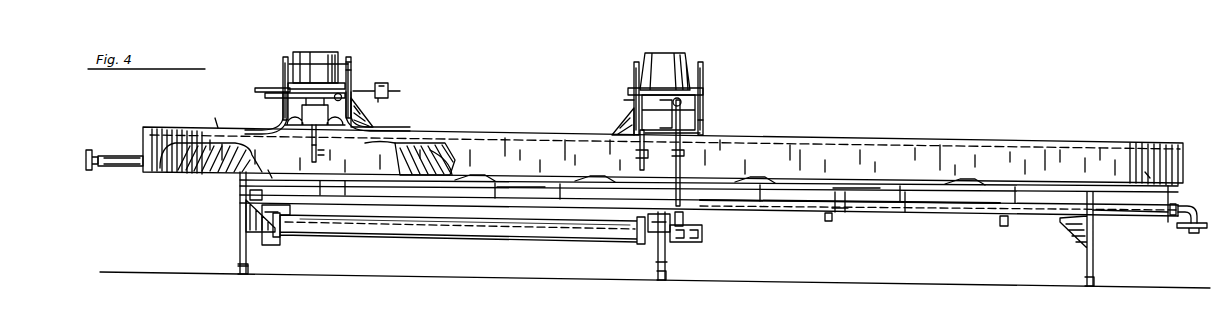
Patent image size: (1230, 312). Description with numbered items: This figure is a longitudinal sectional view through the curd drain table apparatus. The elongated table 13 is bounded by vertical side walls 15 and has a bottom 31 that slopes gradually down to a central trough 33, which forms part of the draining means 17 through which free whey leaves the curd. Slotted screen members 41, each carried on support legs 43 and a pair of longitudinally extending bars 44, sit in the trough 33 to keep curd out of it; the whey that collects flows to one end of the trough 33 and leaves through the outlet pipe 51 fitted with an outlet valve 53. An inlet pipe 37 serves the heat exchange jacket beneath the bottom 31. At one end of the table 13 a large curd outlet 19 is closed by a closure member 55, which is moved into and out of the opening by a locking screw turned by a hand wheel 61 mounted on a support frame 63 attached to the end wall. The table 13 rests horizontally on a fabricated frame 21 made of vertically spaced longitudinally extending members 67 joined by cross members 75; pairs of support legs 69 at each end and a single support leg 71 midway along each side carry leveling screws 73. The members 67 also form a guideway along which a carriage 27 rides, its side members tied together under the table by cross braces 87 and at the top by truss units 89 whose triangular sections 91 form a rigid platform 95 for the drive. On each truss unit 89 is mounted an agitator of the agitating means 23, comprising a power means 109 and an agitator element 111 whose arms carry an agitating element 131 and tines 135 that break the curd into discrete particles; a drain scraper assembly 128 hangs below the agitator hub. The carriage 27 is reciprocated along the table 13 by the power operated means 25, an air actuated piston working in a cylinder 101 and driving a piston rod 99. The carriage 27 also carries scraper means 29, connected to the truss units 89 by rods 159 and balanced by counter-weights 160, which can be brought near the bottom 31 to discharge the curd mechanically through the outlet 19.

The table 13 is at (890, 152).
The side walls 15 is at (1168, 144).
The draining means 17 is at (500, 184).
The curd outlet 19 is at (144, 120).
The frame 21 is at (237, 195).
The agitating means 23 is at (340, 52).
The power operated means 25 is at (565, 240).
The carriage 27 is at (358, 72).
The scraper means 29 is at (267, 85).
The bottom 31 is at (1146, 169).
The central trough 33 is at (790, 208).
The inlet pipe 37 is at (1194, 206).
The screen members 41 is at (470, 175).
The support legs 43 is at (845, 208).
The longitudinally extending bars 44 is at (905, 212).
The outlet pipe 51 is at (1160, 214).
The outlet valve 53 is at (1200, 232).
The closure member 55 is at (172, 142).
The hand wheel 61 is at (89, 150).
The support frame 63 is at (118, 167).
The longitudinally extending members 67 is at (430, 200).
The support legs 69 is at (240, 232).
The support leg 71 is at (668, 258).
The leveling screws 73 is at (238, 268).
The cross members 75 is at (250, 195).
The cross braces 87 is at (290, 228).
The truss units 89 is at (284, 62).
The triangular sections 91 is at (353, 62).
The platform 95 is at (660, 92).
The piston rod 99 is at (655, 234).
The cylinder 101 is at (522, 240).
The power means 109 is at (312, 56).
The agitator element 111 is at (215, 128).
The drain scraper assembly 128 is at (312, 152).
The agitating element 131 is at (391, 160).
The tines 135 is at (438, 150).
The rods 159 is at (704, 122).
The counter-weights 160 is at (386, 99).